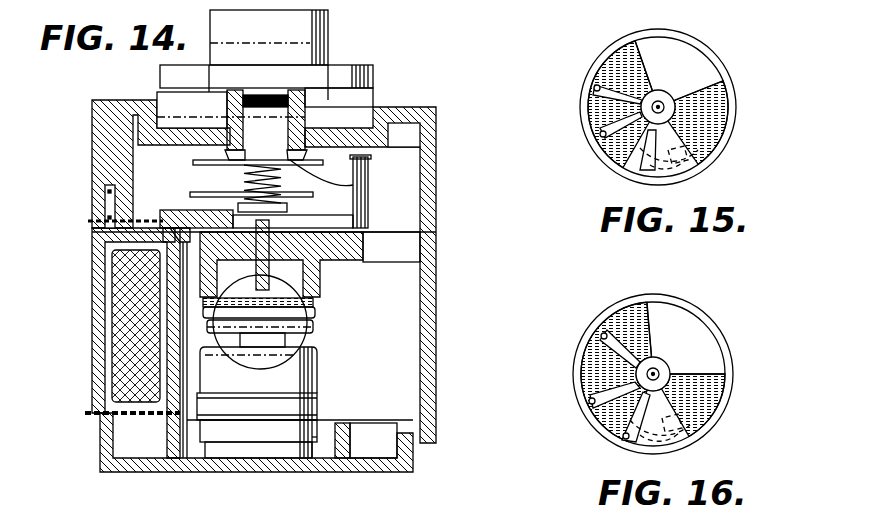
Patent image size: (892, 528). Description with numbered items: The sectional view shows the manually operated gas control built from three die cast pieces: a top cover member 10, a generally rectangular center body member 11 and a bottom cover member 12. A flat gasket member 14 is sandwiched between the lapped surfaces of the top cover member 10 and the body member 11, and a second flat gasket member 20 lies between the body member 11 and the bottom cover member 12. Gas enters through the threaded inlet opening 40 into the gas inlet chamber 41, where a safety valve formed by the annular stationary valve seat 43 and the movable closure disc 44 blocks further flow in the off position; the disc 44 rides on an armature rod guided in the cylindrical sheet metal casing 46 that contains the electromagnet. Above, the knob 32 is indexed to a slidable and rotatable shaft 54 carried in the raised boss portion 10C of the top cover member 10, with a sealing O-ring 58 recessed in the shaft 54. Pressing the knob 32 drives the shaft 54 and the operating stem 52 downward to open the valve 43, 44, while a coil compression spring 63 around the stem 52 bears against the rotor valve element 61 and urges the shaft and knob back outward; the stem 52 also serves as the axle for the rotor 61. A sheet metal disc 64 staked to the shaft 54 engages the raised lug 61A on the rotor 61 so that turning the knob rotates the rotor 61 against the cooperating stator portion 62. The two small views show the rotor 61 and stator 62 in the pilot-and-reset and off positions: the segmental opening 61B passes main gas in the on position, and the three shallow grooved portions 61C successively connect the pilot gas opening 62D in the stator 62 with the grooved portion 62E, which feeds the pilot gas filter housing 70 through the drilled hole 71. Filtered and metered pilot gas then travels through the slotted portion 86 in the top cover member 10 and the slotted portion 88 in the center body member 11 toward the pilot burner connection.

In FIG. 14, the top cover member 10 is at (436, 178).
In FIG. 14, the raised boss portion 10C is at (224, 113).
In FIG. 14, the center body member 11 is at (436, 312).
In FIG. 14, the bottom cover member 12 is at (412, 462).
In FIG. 14, the gasket member 14 is at (430, 232).
In FIG. 14, the gasket member 20 is at (413, 423).
In FIG. 14, the knob 32 is at (328, 38).
In FIG. 14, the threaded inlet opening 40 is at (320, 368).
In FIG. 14, the gas inlet chamber 41 is at (385, 352).
In FIG. 14, the stationary valve seat 43 is at (312, 300).
In FIG. 14, the closure disc 44 is at (315, 312).
In FIG. 14, the sheet metal casing 46 is at (318, 395).
In FIG. 14, the operating stem 52 is at (270, 262).
In FIG. 14, the shaft 54 is at (266, 125).
In FIG. 14, the O-ring 58 is at (262, 96).
In FIG. 14, the rotor valve element 61 is at (165, 210).
In FIG. 15, the rotor valve element 61 is at (730, 74).
In FIG. 16, the rotor valve element 61 is at (712, 333).
In FIG. 14, the raised lug 61A is at (368, 160).
In FIG. 15, the segmental opening 61B is at (678, 56).
In FIG. 16, the segmental opening 61B is at (706, 354).
In FIG. 14, the grooved portions 61C is at (178, 212).
In FIG. 15, the grooved portions 61C is at (600, 130).
In FIG. 16, the grooved portions 61C is at (592, 398).
In FIG. 14, the stator portion 62 is at (360, 242).
In FIG. 14, the pilot gas opening 62D is at (220, 248).
In FIG. 15, the pilot gas opening 62D is at (680, 122).
In FIG. 16, the pilot gas opening 62D is at (670, 385).
In FIG. 14, the grooved portion 62E is at (172, 226).
In FIG. 15, the grooved portion 62E is at (733, 138).
In FIG. 16, the grooved portion 62E is at (706, 400).
In FIG. 14, the coil compression spring 63 is at (244, 178).
In FIG. 14, the sheet metal disc 64 is at (353, 185).
In FIG. 14, the pilot gas filter housing 70 is at (125, 270).
In FIG. 14, the drilled hole 71 is at (186, 282).
In FIG. 14, the slotted portion 86 is at (105, 200).
In FIG. 14, the slotted portion 88 is at (100, 223).